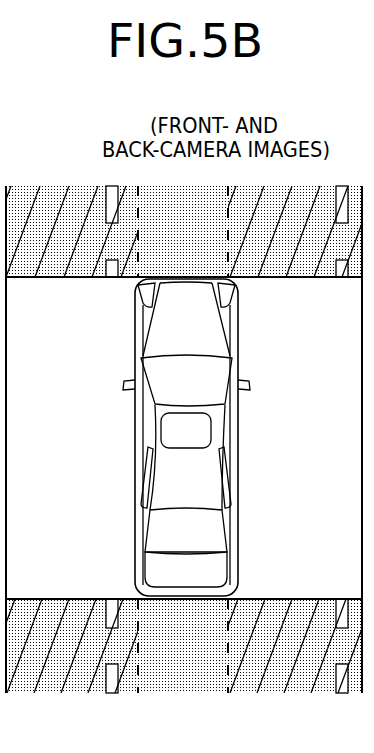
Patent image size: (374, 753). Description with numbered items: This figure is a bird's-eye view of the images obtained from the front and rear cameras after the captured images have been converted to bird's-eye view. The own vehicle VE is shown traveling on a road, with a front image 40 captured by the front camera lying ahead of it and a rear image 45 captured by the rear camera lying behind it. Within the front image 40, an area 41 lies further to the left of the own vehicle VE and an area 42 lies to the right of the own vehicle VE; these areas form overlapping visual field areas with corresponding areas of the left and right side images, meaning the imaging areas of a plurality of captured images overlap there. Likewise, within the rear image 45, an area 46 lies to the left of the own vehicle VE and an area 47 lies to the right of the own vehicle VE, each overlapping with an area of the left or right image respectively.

The front image 40 is at (114, 294).
The area of the front image 41 is at (110, 185).
The area of the front image 42 is at (336, 186).
The rear image 45 is at (114, 574).
The area of the rear image 46 is at (39, 609).
The area of the rear image 47 is at (284, 610).
The own vehicle VE is at (240, 442).